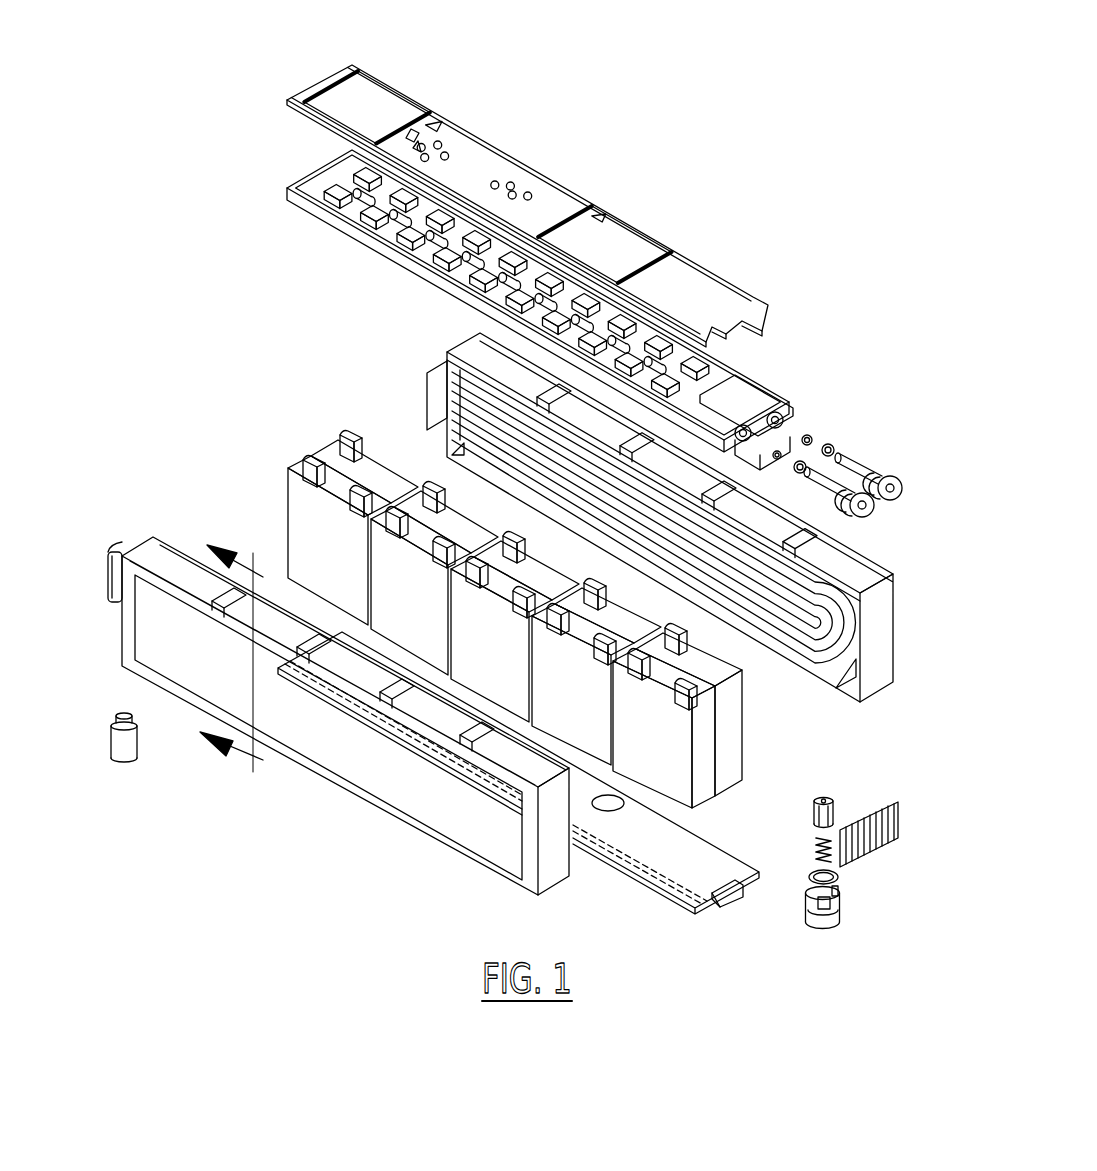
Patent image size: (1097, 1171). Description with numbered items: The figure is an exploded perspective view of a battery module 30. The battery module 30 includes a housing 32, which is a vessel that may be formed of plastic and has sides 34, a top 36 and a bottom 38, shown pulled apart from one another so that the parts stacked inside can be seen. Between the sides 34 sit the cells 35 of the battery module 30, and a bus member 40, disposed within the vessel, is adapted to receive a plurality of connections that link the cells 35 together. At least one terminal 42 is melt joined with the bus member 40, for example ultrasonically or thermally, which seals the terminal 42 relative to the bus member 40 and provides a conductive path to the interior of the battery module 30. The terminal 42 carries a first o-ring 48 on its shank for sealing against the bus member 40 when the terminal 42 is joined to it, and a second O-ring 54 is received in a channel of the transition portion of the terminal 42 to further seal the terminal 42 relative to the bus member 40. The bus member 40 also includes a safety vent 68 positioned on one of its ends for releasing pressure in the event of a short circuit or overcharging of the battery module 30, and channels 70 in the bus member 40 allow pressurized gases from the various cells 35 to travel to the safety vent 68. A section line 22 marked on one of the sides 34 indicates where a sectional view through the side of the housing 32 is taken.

The battery module 30 is at (614, 108).
The housing 32 is at (390, 338).
The sides 34 is at (878, 670).
The cells 35 is at (704, 763).
The top 36 is at (715, 262).
The bottom 38 is at (649, 863).
The bus member 40 is at (758, 380).
The terminal 42 is at (829, 482).
The first o-ring 48 is at (809, 433).
The second O-ring 54 is at (831, 444).
The safety vent 68 is at (866, 915).
The channels 70 is at (742, 366).
The section line 22- 22 is at (231, 647).